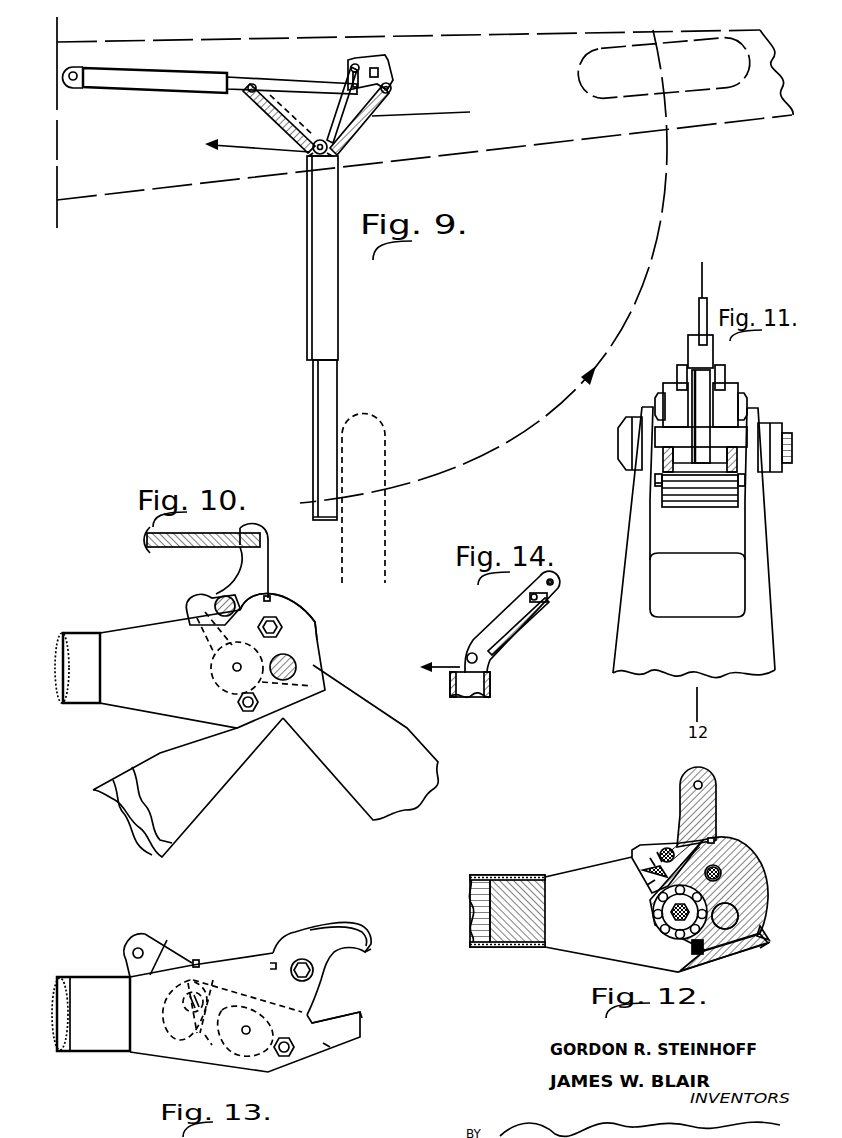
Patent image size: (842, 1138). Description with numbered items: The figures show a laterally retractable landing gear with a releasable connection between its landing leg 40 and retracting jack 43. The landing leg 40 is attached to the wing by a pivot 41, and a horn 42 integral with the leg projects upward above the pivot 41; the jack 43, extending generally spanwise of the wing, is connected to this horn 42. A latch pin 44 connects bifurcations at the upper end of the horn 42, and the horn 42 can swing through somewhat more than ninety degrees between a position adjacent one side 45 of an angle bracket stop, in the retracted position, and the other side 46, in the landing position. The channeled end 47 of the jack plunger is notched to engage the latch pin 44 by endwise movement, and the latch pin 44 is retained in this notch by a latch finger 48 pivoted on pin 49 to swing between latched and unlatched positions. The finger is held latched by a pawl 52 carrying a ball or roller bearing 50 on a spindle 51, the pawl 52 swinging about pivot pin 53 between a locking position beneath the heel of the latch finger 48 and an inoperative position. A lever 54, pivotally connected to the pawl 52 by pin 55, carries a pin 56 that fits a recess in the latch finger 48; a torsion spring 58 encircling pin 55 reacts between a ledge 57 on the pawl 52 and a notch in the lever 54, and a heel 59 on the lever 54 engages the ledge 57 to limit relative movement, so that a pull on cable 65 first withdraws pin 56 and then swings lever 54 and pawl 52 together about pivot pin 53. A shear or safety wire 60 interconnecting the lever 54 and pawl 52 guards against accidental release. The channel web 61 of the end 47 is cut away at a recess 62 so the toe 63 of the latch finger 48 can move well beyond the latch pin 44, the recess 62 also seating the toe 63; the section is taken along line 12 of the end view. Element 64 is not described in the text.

In FIG. 11, the section line 12 is at (703, 269).
In FIG. 9, the landing leg 40 is at (322, 309).
In FIG. 14, the landing leg 40 is at (468, 682).
In FIG. 9, the pivot 41 is at (308, 155).
In FIG. 14, the pivot 41 is at (469, 656).
In FIG. 9, the horn 42 is at (356, 122).
In FIG. 10, the horn 42 is at (187, 790).
In FIG. 11, the horn 42 is at (702, 658).
In FIG. 14, the horn 42 is at (498, 628).
In FIG. 9, the jack 43 is at (145, 96).
In FIG. 10, the jack 43 is at (82, 710).
In FIG. 12, the jack 43 is at (508, 948).
In FIG. 13, the jack 43 is at (90, 1056).
In FIG. 9, the latch pin 44 is at (389, 86).
In FIG. 10, the latch pin 44 is at (297, 667).
In FIG. 11, the latch pin 44 is at (617, 443).
In FIG. 14, the latch pin 44 is at (552, 586).
In FIG. 12, the latch pin 44 is at (747, 907).
In FIG. 9, the one side of angle bracket stop 45 is at (278, 116).
In FIG. 9, the other side of angle bracket 46 is at (373, 115).
In FIG. 14, the other side of angle bracket 46 is at (530, 624).
In FIG. 10, the channeled end of jack plunger 47 is at (114, 672).
In FIG. 11, the channeled end of jack plunger 47 is at (700, 514).
In FIG. 12, the channeled end of jack plunger 47 is at (572, 933).
In FIG. 13, the channeled end of jack plunger 47 is at (150, 1040).
In FIG. 10, the latch finger 48 is at (303, 643).
In FIG. 11, the latch finger 48 is at (701, 416).
In FIG. 12, the latch finger 48 is at (733, 883).
In FIG. 13, the latch finger 48 is at (333, 930).
In FIG. 10, the pin 49 is at (283, 626).
In FIG. 11, the pin 49 is at (748, 405).
In FIG. 12, the pin 49 is at (721, 871).
In FIG. 13, the pin 49 is at (298, 958).
In FIG. 10, the ball or roller bearing 50 is at (210, 678).
In FIG. 12, the ball or roller bearing 50 is at (662, 921).
In FIG. 13, the ball or roller bearing 50 is at (240, 1058).
In FIG. 12, the spindle 51 is at (655, 907).
In FIG. 10, the pawl 52 is at (180, 599).
In FIG. 11, the pawl 52 is at (727, 372).
In FIG. 12, the pawl 52 is at (620, 851).
In FIG. 13, the pawl 52 is at (180, 1037).
In FIG. 10, the pivot pin 53 is at (238, 708).
In FIG. 12, the pivot pin 53 is at (706, 958).
In FIG. 13, the pivot pin 53 is at (285, 1058).
In FIG. 10, the lever 54 is at (240, 576).
In FIG. 11, the lever 54 is at (699, 318).
In FIG. 12, the lever 54 is at (708, 793).
In FIG. 13, the lever 54 is at (172, 957).
In FIG. 10, the pin 55 is at (222, 601).
In FIG. 11, the pin 55 is at (675, 380).
In FIG. 12, the pin 55 is at (668, 848).
In FIG. 13, the pin 55 is at (183, 1001).
In FIG. 10, the pin 56 is at (271, 598).
In FIG. 12, the pin 56 is at (716, 843).
In FIG. 13, the pin 56 is at (197, 960).
In FIG. 12, the ledge 57 is at (647, 885).
In FIG. 12, the torsion spring 58 is at (643, 870).
In FIG. 12, the heel 59 is at (660, 852).
In FIG. 12, the shear or safety wire 60 is at (650, 858).
In FIG. 11, the channel web 61 is at (656, 483).
In FIG. 12, the channel web 61 is at (737, 950).
In FIG. 13, the channel web 61 is at (323, 1043).
In FIG. 12, the recess 62 is at (766, 928).
In FIG. 13, the recess 62 is at (361, 1013).
In FIG. 12, the toe 63 is at (760, 948).
In FIG. 13, the toe 63 is at (371, 949).
In FIG. 13, the hidden edge 64 is at (313, 1022).
In FIG. 9, the cable 65 is at (263, 148).
In FIG. 10, the cable 65 is at (148, 541).